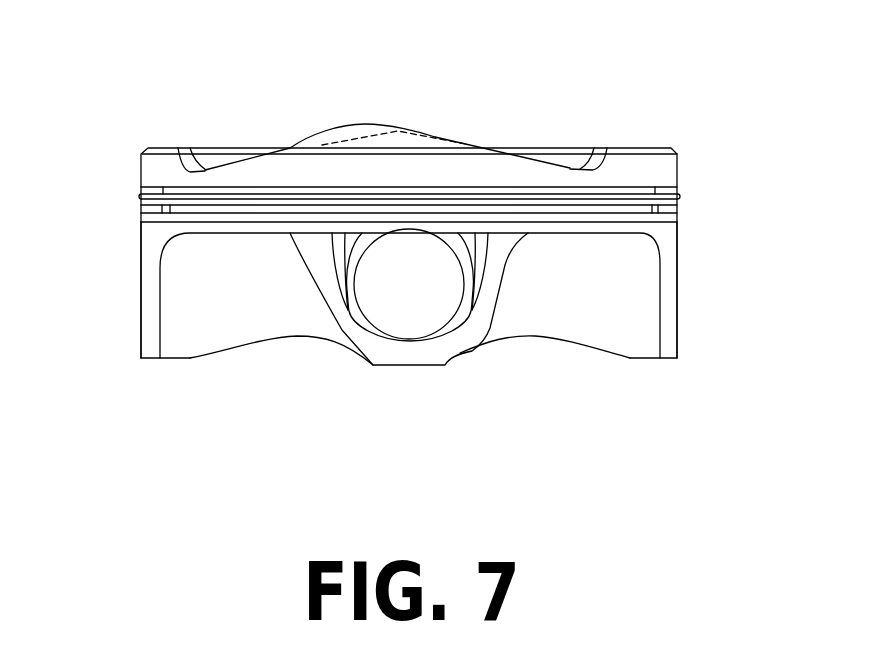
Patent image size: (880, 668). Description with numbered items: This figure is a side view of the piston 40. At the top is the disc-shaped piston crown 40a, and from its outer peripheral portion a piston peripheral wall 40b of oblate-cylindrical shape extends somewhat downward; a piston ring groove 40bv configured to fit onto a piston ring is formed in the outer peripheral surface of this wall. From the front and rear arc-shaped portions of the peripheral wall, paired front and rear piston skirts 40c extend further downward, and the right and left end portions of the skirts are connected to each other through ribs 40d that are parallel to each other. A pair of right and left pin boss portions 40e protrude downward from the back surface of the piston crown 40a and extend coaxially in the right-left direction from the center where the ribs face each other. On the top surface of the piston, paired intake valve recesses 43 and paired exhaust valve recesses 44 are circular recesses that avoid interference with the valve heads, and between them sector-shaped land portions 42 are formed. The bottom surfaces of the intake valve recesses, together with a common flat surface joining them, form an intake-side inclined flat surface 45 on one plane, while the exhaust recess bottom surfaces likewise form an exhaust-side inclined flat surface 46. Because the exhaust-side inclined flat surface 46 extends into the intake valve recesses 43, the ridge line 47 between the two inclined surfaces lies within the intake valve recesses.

The piston 40 is at (292, 120).
The piston crown 40a is at (140, 177).
The piston peripheral wall 40b is at (137, 202).
The piston ring groove 40bv is at (680, 217).
The piston skirt 40c is at (140, 303).
The rib 40d is at (238, 345).
The pin boss portion 40e is at (340, 337).
The land portion 42 is at (363, 126).
The intake valve recess 43 is at (546, 152).
The exhaust valve recess 44 is at (228, 152).
The intake-side inclined flat surface 45 is at (580, 165).
The exhaust-side inclined flat surface 46 is at (185, 162).
The ridge line 47 is at (399, 130).